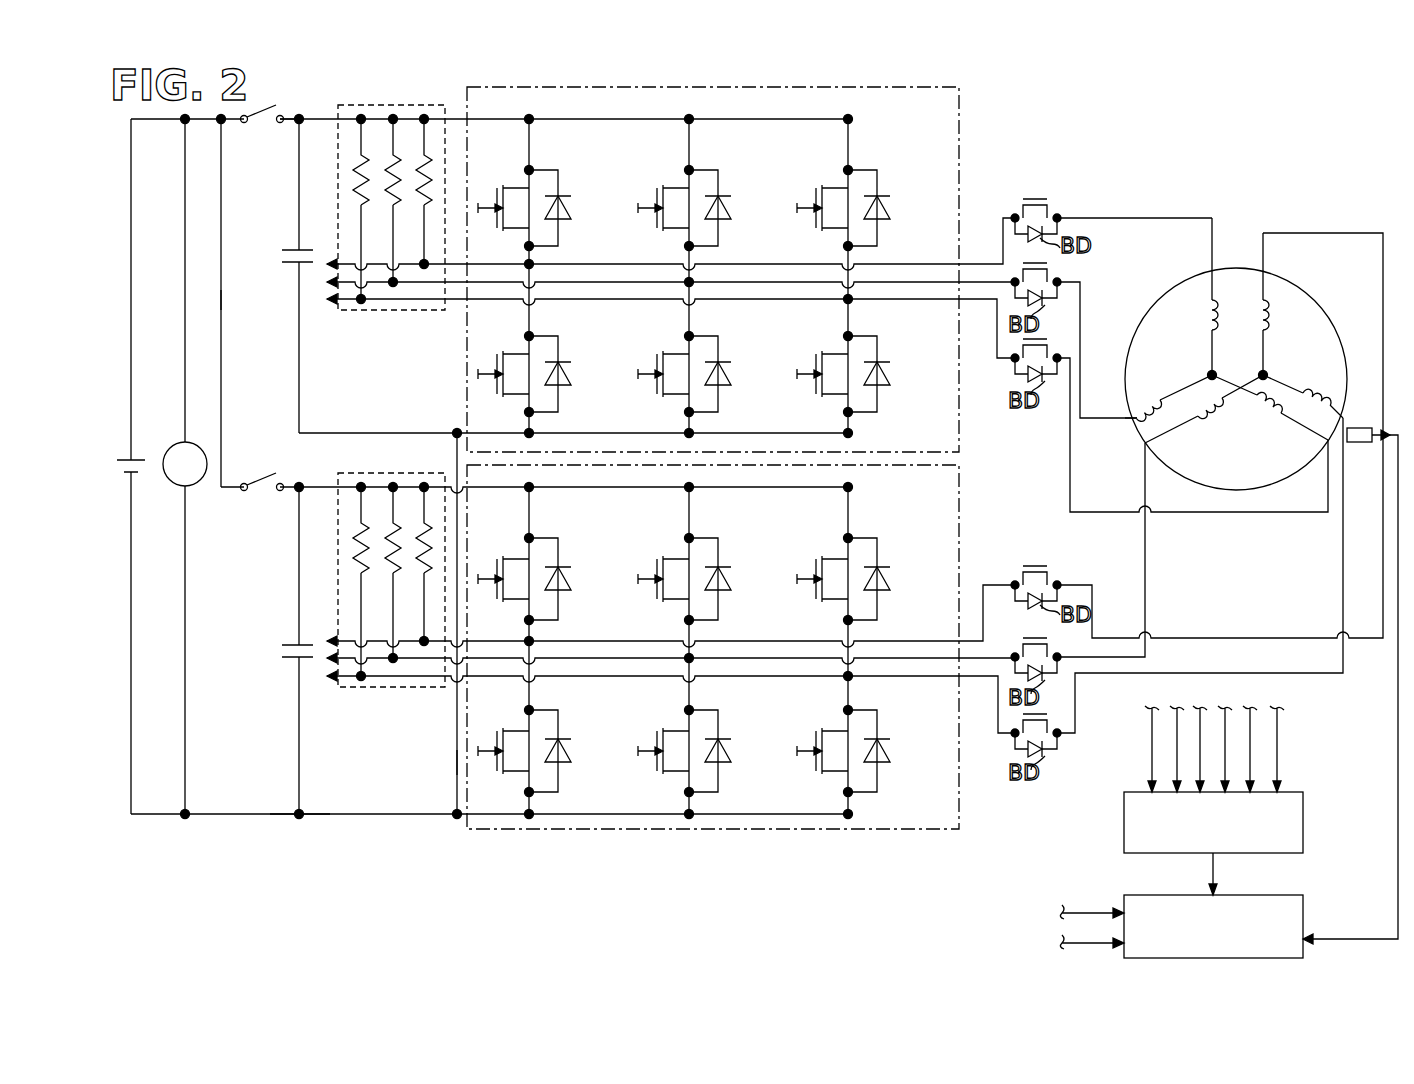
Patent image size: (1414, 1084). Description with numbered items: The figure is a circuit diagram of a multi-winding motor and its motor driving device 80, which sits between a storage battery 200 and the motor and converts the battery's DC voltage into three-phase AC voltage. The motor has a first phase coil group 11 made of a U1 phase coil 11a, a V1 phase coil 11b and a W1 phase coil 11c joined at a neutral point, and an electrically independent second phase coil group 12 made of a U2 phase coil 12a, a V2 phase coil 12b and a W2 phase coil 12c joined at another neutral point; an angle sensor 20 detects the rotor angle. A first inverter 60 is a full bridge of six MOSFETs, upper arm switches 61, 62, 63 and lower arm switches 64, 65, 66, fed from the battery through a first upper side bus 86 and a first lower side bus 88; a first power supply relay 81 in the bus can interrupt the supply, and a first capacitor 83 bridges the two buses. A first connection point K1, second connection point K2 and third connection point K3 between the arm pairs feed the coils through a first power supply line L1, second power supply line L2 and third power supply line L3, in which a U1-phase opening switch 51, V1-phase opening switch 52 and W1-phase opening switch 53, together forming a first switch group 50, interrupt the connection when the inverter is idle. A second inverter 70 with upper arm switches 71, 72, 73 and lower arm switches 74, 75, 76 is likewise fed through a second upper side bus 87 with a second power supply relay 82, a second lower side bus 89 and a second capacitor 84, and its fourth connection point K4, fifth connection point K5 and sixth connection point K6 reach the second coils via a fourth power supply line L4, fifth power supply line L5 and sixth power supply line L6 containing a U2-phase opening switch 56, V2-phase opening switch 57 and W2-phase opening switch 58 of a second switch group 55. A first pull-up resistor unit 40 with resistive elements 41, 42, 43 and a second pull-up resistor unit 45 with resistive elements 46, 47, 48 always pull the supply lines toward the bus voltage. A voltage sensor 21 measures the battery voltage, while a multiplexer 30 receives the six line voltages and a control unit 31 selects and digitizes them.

The storage battery 200 is at (124, 457).
The voltage sensor 21 is at (172, 452).
The first power supply relay 81 is at (262, 112).
The second power supply relay 82 is at (262, 481).
The first capacitor 83 is at (296, 250).
The second capacitor 84 is at (296, 645).
The first upper side bus 86 is at (310, 116).
The second upper side bus 87 is at (221, 298).
The first lower side bus 88 is at (457, 764).
The second lower side bus 89 is at (290, 816).
The first pull-up resistor unit 40 is at (392, 98).
The resistive element 41 is at (420, 206).
The resistive element 42 is at (388, 206).
The resistive element 43 is at (356, 181).
The second pull-up resistor unit 45 is at (386, 475).
The resistive element 46 is at (420, 570).
The resistive element 47 is at (388, 570).
The resistive element 48 is at (356, 548).
The first inverter 60 is at (962, 120).
The upper arm switch 61 is at (517, 188).
The upper arm switch 62 is at (677, 188).
The upper arm switch 63 is at (836, 188).
The lower arm switch 64 is at (517, 350).
The lower arm switch 65 is at (677, 350).
The lower arm switch 66 is at (836, 350).
The second inverter 70 is at (962, 480).
The upper arm switch 71 is at (517, 554).
The upper arm switch 72 is at (677, 554).
The upper arm switch 73 is at (836, 554).
The lower arm switch 74 is at (517, 725).
The lower arm switch 75 is at (677, 725).
The lower arm switch 76 is at (836, 725).
The motor driving device 80 is at (988, 99).
The first switch group 50 is at (1105, 210).
The U1-phase opening switch 51 is at (1048, 220).
The V1-phase opening switch 52 is at (1048, 285).
The W1-phase opening switch 53 is at (1046, 356).
The second switch group 55 is at (1103, 614).
The U2-phase opening switch 56 is at (1048, 588).
The V2-phase opening switch 57 is at (1048, 660).
The W2-phase opening switch 58 is at (1046, 734).
The first phase coil group 11 is at (1195, 341).
The U1 phase coil 11a is at (1208, 300).
The V1 phase coil 11b is at (1135, 420).
The W1 phase coil 11c is at (1266, 410).
The second phase coil group 12 is at (1278, 338).
The U2 phase coil 12a is at (1268, 300).
The V2 phase coil 12b is at (1206, 412).
The W2 phase coil 12c is at (1319, 400).
The angle sensor 20 is at (1360, 428).
The multiplexer 30 is at (1295, 791).
The control unit 31 is at (1290, 900).
The first power supply line L1 is at (765, 276).
The second power supply line L2 is at (938, 284).
The third power supply line L3 is at (979, 300).
The fourth power supply line L4 is at (930, 641).
The fifth power supply line L5 is at (938, 659).
The sixth power supply line L6 is at (979, 677).
The first connection point K1 is at (531, 262).
The second connection point K2 is at (692, 280).
The third connection point K3 is at (851, 302).
The fourth connection point K4 is at (531, 639).
The fifth connection point K5 is at (692, 656).
The sixth connection point K6 is at (851, 679).